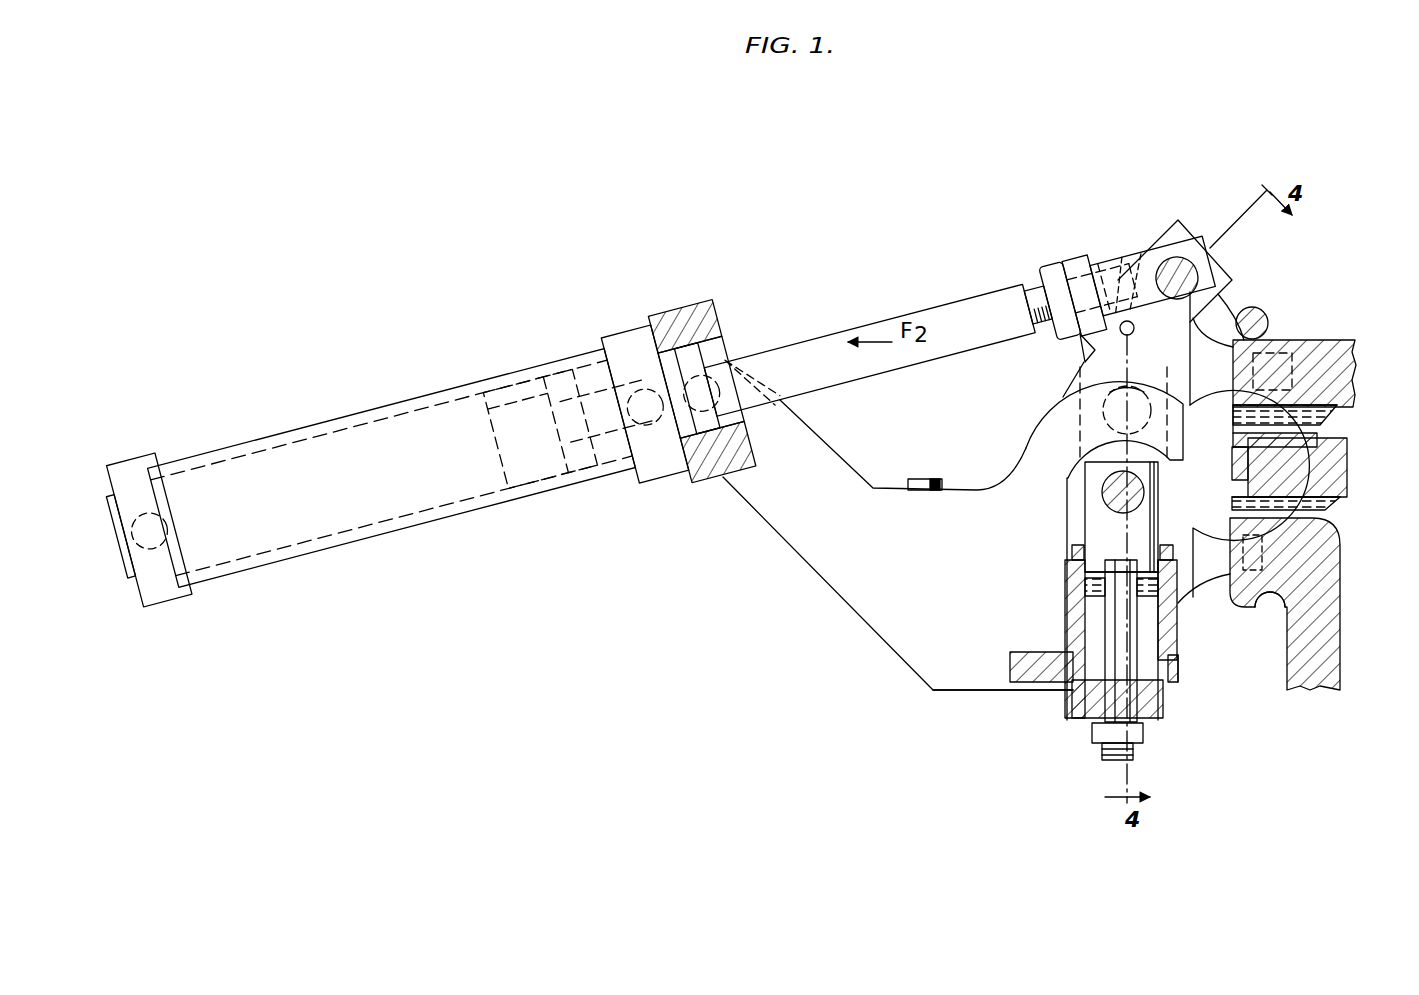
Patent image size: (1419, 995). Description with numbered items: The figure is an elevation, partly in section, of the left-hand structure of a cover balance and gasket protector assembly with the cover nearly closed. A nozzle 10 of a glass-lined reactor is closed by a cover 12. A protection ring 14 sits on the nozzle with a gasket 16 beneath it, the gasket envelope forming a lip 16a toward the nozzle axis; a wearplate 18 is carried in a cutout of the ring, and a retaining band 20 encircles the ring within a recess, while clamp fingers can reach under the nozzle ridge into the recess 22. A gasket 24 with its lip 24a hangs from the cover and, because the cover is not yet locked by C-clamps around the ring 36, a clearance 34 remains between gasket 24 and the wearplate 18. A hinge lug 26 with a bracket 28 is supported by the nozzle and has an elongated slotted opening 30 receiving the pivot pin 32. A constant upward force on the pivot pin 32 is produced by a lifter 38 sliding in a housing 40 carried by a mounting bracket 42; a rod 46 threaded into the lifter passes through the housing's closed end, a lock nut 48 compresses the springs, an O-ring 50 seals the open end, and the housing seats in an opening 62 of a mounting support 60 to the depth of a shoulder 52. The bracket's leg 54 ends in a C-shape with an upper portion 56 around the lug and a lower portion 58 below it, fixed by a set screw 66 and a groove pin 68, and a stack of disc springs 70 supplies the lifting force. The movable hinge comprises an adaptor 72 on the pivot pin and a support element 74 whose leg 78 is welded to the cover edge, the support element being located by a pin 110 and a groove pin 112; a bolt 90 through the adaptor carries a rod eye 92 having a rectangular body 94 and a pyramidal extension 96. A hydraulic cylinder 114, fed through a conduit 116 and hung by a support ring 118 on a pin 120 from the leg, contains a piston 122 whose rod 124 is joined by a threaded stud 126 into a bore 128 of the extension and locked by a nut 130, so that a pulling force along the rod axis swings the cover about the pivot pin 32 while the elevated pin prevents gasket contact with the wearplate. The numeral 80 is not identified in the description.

The nozzle 10 is at (1335, 592).
The cover 12 is at (1330, 345).
The protection ring 14 is at (1348, 460).
The gasket 16 is at (1335, 509).
The lip 16a is at (1340, 501).
The wearplate 18 is at (1233, 440).
The retaining band 20 is at (1237, 463).
The recess 22 is at (1270, 593).
The gasket 24 is at (1338, 417).
The lip 24a is at (1340, 408).
The hinge lug 26 is at (1190, 592).
The bracket 28 is at (1219, 522).
The opening 30 is at (1123, 514).
The pivot pin 32 is at (1085, 478).
The clearance 34 is at (1222, 434).
The ring 36 is at (1258, 315).
The lifter 38 is at (1085, 510).
The housing 40 is at (1085, 575).
The mounting bracket 42 is at (888, 608).
The rod 46 is at (1092, 612).
The lock nut 48 is at (1143, 733).
The O-ring 50 is at (1070, 552).
The shoulder 52 is at (1058, 662).
The leg 54 is at (810, 562).
The upper portion 56 is at (1066, 404).
The lower portion 58 is at (1179, 660).
The mounting support 60 is at (1180, 670).
The opening 62 is at (1068, 691).
The set screw 66 is at (1166, 628).
The groove pin 68 is at (1140, 401).
The disc springs 70 is at (1085, 590).
The adaptor 72 is at (1228, 300).
The support element 74 is at (1080, 355).
The leg 78 is at (1215, 346).
The recess 80 is at (1290, 350).
The bolt 90 is at (1200, 276).
The rod eye 92 is at (1129, 258).
The body 94 is at (1186, 226).
The extension 96 is at (1086, 270).
The pin 110 is at (1116, 389).
The groove pin 112 is at (1132, 330).
The hydraulic cylinder 114 is at (395, 530).
The conduit 116 is at (646, 425).
The support ring 118 is at (690, 316).
The pin 120 is at (727, 357).
The piston 122 is at (517, 390).
The rod 124 is at (886, 313).
The stud 126 is at (1030, 296).
The bore 128 is at (1097, 262).
The nut 130 is at (1053, 268).